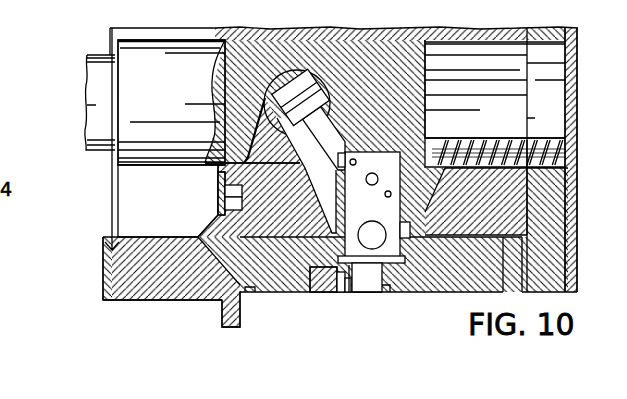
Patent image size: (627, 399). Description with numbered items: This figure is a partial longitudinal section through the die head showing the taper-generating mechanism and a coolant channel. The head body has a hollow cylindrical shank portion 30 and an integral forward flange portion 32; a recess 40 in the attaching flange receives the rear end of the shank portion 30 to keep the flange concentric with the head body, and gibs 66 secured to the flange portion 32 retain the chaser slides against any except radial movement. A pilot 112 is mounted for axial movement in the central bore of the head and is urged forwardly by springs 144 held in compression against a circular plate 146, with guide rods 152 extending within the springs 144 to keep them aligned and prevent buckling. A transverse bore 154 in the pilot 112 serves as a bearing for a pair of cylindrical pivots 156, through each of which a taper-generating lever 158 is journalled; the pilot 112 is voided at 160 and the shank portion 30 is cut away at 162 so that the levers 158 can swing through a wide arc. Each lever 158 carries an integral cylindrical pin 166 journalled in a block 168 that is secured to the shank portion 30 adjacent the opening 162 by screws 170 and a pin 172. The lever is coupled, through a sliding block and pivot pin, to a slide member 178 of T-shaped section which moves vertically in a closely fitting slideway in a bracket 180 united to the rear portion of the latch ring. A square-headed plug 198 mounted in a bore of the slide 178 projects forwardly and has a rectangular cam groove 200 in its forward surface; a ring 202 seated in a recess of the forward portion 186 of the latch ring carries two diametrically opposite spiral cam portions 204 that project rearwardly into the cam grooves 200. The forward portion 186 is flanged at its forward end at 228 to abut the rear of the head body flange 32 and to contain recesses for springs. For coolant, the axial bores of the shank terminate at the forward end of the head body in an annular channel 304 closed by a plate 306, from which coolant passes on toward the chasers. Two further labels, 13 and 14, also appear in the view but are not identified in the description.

The cutting tool 13 is at (253, 1).
The transverse bore 154 is at (290, 76).
The cylindrical pivots 156 is at (318, 78).
The circular plate 146 is at (575, 58).
The pilot 112 is at (158, 96).
The workpiece 14 is at (12, 125).
The guide rods 152 is at (478, 147).
The springs 144 is at (540, 152).
The taper-generating lever 158 is at (317, 152).
The void in pilot 160 is at (247, 162).
The plate 306 is at (225, 187).
The annular channel 304 is at (225, 202).
The pin 172 is at (384, 171).
The screws 170 is at (385, 194).
The cylindrical pin 166 is at (378, 213).
The cut-away opening in shank 162 is at (455, 186).
The block 168 is at (390, 211).
The shank portion 30 is at (526, 193).
The recess 40 is at (528, 217).
The gibs 66 is at (103, 272).
The forward flange portion 32 is at (170, 292).
The flange of latch ring forward portion 228 is at (232, 326).
The forward portion of latch ring 186 is at (266, 289).
The ring 202 is at (335, 283).
The spiral cam portions 204 is at (340, 287).
The cam groove 200 is at (347, 292).
The square-headed plug 198 is at (351, 296).
The bracket 180 is at (386, 296).
The slide member 178 is at (381, 298).